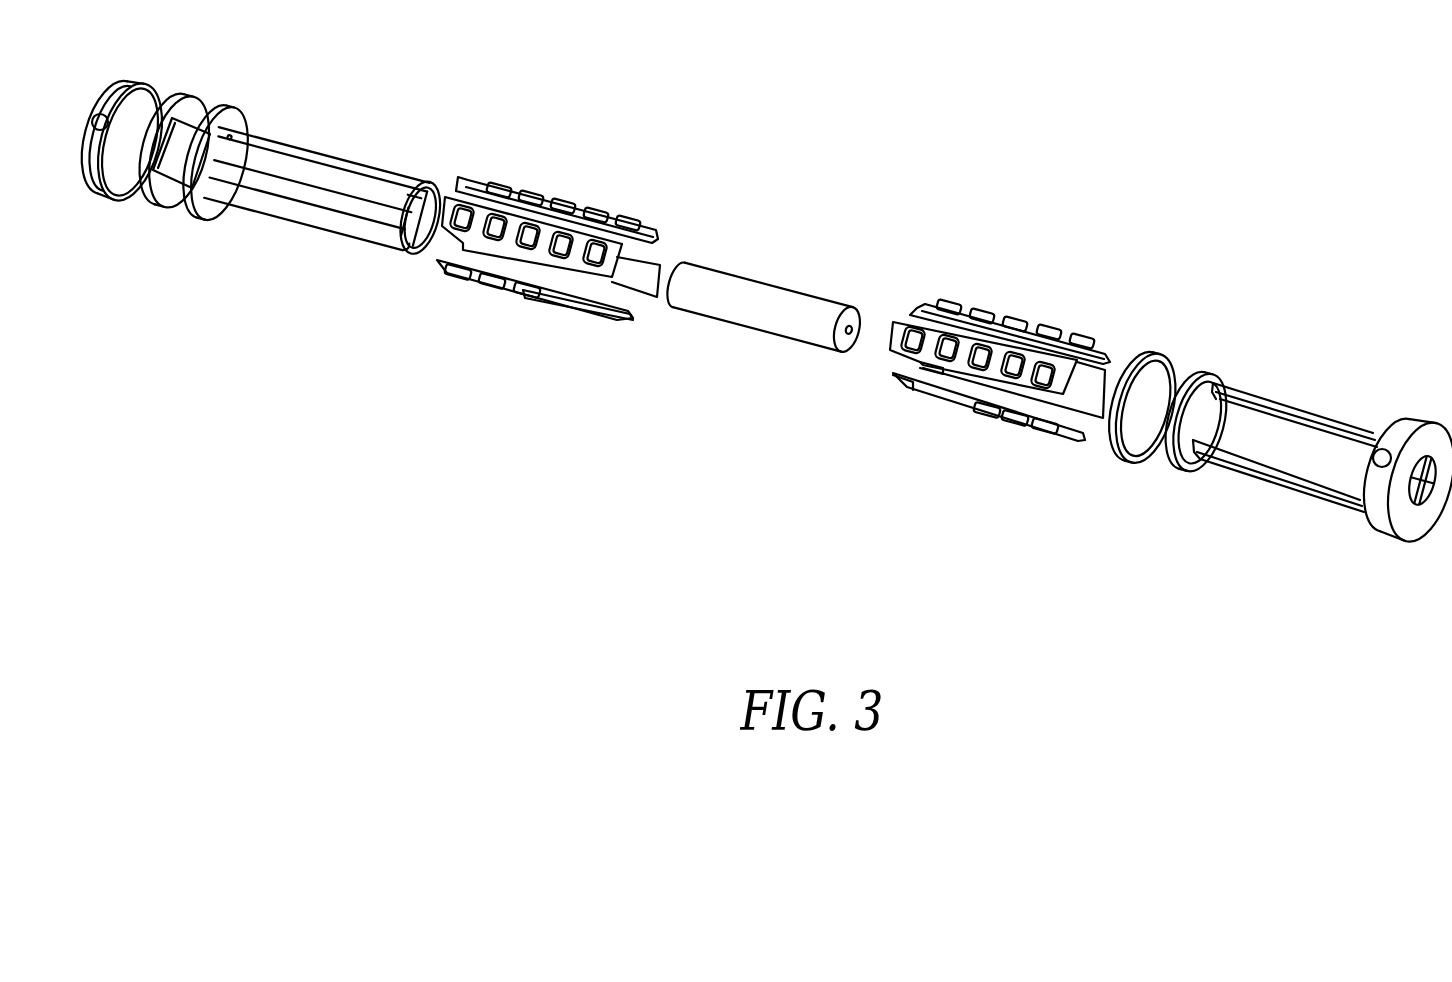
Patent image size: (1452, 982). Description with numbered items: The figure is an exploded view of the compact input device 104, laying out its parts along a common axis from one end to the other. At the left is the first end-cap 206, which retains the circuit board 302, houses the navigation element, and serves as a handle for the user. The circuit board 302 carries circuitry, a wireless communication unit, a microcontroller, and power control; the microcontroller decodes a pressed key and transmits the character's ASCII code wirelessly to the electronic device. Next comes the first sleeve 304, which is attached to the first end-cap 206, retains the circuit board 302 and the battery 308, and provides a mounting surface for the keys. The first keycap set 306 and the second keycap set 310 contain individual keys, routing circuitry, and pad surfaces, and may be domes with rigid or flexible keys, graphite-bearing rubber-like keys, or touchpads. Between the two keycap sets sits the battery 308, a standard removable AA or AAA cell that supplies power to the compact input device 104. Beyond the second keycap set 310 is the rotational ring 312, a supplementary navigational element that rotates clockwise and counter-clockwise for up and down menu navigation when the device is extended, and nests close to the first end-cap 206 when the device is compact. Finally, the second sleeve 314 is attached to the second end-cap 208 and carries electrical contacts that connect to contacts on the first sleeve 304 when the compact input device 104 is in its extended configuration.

The compact input device 104 is at (297, 428).
The first end-cap 206 is at (103, 195).
The second end-cap 208 is at (1411, 415).
The circuit board 302 is at (162, 206).
The first sleeve 304 is at (258, 214).
The first keycap set 306 is at (492, 280).
The battery 308 is at (757, 332).
The second keycap set 310 is at (1017, 320).
The rotational ring 312 is at (1130, 462).
The second sleeve 314 is at (1247, 478).